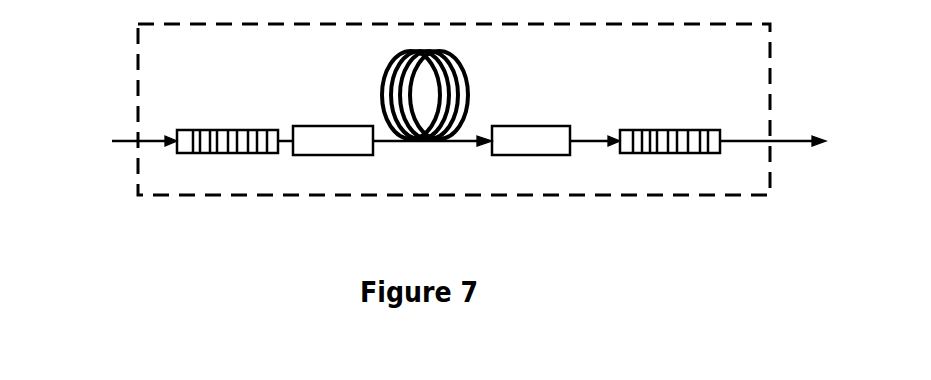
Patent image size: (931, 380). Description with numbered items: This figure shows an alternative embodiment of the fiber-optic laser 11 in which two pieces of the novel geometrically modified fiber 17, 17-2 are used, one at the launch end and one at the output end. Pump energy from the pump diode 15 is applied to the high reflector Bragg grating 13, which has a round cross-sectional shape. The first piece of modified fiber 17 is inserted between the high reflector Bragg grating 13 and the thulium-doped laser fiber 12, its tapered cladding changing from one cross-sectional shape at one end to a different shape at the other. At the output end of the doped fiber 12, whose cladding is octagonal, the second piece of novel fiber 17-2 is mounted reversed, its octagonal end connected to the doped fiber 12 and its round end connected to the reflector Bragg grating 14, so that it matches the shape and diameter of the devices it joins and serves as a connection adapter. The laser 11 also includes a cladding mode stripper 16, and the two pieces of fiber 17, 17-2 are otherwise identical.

The laser 11 is at (424, 145).
The doped fiber 12 is at (387, 57).
The high reflector Bragg grating 13 is at (223, 160).
The low reflector Bragg grating 14 is at (688, 156).
The pump diode 15 is at (100, 142).
The cladding mode stripper 16 is at (760, 195).
The geometrically modified fiber 17 is at (322, 160).
The second piece of novel fiber 17-2 is at (537, 160).